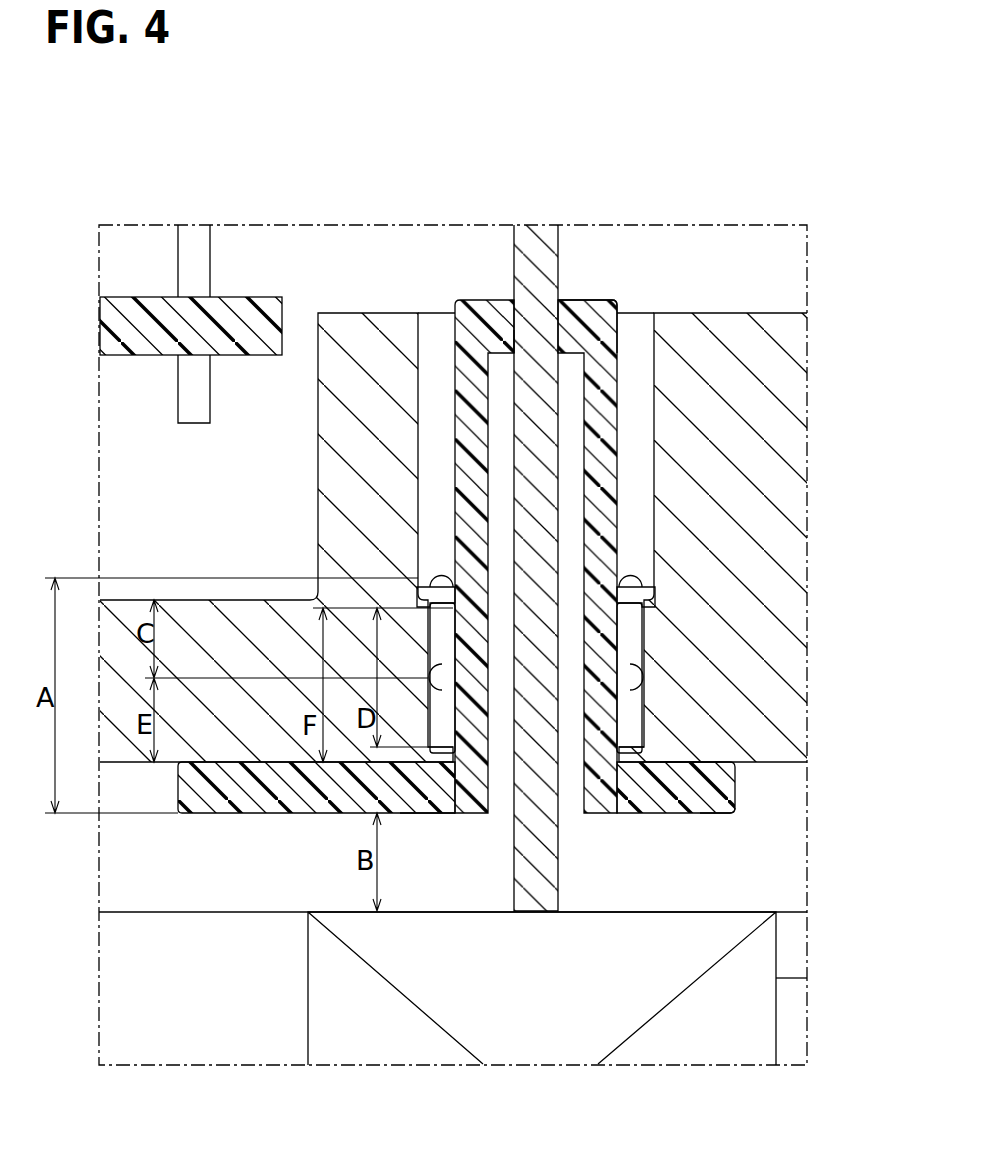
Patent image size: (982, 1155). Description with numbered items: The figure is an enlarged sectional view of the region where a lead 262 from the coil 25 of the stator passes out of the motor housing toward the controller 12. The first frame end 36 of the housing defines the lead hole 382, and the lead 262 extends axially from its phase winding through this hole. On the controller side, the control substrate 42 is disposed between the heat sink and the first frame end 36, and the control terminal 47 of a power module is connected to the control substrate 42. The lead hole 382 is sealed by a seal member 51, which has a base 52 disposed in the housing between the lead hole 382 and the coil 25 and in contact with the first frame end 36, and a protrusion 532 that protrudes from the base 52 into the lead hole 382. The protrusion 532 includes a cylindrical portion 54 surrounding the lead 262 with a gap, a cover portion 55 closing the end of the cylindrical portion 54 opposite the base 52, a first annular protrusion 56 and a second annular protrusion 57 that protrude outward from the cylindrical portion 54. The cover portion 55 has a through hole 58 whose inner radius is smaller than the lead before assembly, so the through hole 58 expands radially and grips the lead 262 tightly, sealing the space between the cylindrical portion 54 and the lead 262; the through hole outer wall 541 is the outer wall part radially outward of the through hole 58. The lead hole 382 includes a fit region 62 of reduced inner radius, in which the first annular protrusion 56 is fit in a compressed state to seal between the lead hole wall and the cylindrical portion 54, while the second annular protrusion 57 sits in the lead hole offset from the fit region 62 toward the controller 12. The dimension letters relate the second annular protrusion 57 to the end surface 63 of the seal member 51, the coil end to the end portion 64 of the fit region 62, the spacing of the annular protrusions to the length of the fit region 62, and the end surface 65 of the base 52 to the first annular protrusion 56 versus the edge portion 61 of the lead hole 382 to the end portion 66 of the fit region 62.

The controller 12 is at (178, 297).
The coil 25 is at (765, 948).
The first frame end 36 is at (780, 318).
The control substrate 42 is at (125, 330).
The control terminal 47 is at (175, 400).
The seal member 51 is at (427, 827).
The base 52 is at (270, 800).
The cylindrical portion 54 is at (707, 479).
The cover portion 55 is at (505, 320).
The first annular protrusion 56 is at (637, 680).
The second annular protrusion 57 is at (640, 562).
The through hole 58 is at (516, 321).
The edge portion 61 is at (705, 798).
The fit region 62 is at (630, 632).
The end surface 63 is at (667, 813).
The end portion 64 is at (627, 745).
The end surface 65 is at (688, 755).
The end portion 66 is at (633, 585).
The lead 262 is at (544, 228).
The lead hole 382 is at (418, 350).
The protrusion 532 is at (608, 297).
The through hole outer wall 541 is at (620, 327).